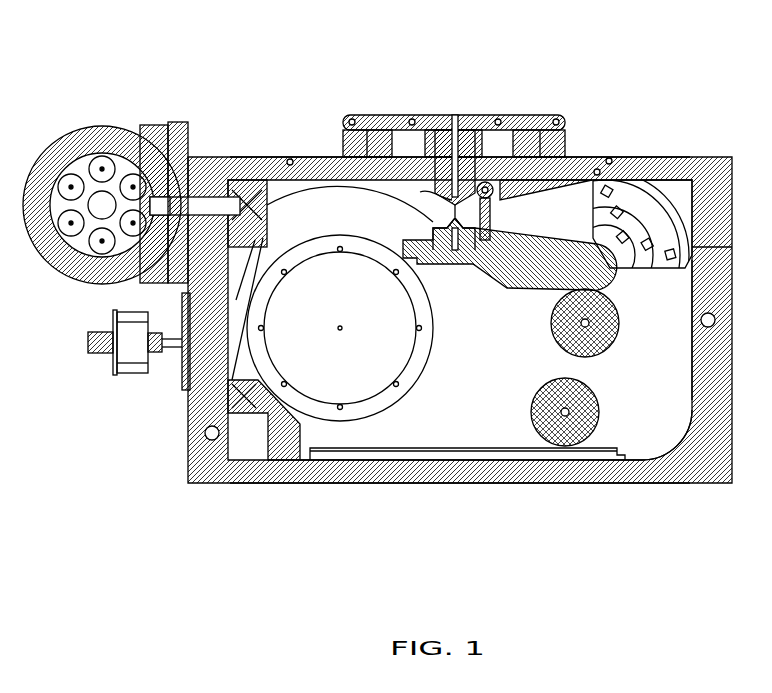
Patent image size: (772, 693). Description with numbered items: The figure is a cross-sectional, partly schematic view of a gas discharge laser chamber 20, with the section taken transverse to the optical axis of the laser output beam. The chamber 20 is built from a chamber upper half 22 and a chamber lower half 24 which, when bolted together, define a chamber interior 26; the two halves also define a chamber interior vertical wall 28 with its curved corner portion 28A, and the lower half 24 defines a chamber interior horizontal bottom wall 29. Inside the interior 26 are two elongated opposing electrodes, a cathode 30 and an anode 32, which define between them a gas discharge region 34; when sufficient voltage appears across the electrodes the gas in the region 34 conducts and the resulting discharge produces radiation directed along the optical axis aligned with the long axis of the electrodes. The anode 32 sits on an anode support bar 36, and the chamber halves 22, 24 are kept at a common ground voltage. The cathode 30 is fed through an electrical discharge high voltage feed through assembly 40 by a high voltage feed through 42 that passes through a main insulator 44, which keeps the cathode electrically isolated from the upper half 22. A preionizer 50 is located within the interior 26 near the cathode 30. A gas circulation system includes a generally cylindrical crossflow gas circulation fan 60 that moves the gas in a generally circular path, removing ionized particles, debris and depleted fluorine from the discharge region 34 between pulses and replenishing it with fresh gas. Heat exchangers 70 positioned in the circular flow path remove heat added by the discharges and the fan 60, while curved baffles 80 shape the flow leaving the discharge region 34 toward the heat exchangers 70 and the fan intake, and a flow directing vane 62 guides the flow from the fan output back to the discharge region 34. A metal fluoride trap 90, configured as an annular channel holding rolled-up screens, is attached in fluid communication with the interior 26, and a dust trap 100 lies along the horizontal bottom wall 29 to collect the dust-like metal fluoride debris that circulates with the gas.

The gas discharge chamber 20 is at (572, 95).
The chamber upper half 22 is at (286, 158).
The chamber lower half 24 is at (303, 483).
The chamber interior 26 is at (350, 206).
The chamber interior vertical wall 28 is at (688, 298).
The curved corner portion 28A is at (656, 440).
The chamber interior horizontal bottom wall 29 is at (560, 462).
The cathode 30 is at (418, 192).
The anode 32 is at (438, 227).
The gas discharge region 34 is at (428, 214).
The anode support bar 36 is at (500, 280).
The electrical discharge high voltage feed through assembly 40 is at (567, 137).
The high voltage feed through 42 is at (441, 114).
The main insulator 44 is at (558, 188).
The preionizer 50 is at (496, 208).
The gas circulation fan 60 is at (434, 308).
The flow directing vane 62 is at (258, 243).
The heat exchangers 70 is at (550, 324).
The curved baffles 80 is at (680, 190).
The metal fluoride trap 90 is at (132, 113).
The dust trap 100 is at (378, 448).